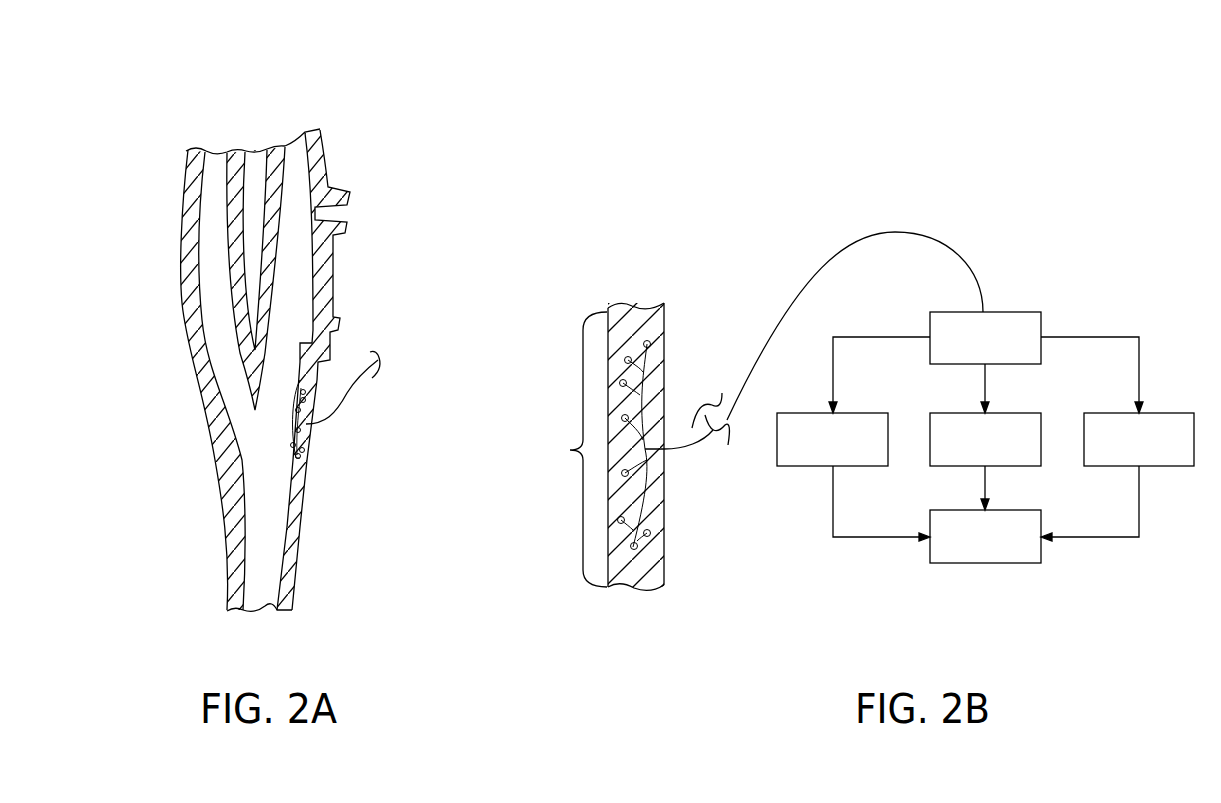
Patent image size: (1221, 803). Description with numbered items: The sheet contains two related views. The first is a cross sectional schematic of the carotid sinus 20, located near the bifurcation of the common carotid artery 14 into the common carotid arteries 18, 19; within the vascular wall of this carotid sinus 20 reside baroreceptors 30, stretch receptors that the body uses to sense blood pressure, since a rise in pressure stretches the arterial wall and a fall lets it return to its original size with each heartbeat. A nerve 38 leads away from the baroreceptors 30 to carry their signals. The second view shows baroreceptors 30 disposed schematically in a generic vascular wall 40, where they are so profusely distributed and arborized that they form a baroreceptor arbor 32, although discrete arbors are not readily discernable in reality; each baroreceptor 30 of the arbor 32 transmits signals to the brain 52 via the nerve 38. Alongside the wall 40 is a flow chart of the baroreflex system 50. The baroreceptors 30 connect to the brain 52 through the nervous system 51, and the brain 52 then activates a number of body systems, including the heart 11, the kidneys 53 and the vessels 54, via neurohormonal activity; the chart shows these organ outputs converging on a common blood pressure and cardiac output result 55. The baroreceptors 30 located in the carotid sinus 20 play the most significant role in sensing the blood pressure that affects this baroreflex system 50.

In FIG. 2A, the common carotid artery 14 is at (288, 577).
In FIG. 2A, the common carotid artery 18 is at (190, 205).
In FIG. 2A, the common carotid artery 19 is at (320, 161).
In FIG. 2A, the carotid sinus 20 is at (183, 459).
In FIG. 2A, the baroreceptors 30 is at (317, 437).
In FIG. 2B, the baroreceptors 30 is at (668, 493).
In FIG. 2A, the nerve 38 is at (347, 393).
In FIG. 2B, the nerve 38 is at (708, 443).
In FIG. 2B, the baroreceptor arbor 32 is at (570, 449).
In FIG. 2B, the vascular wall 40 is at (667, 550).
In FIG. 2B, the nervous system 51 is at (798, 285).
In FIG. 2B, the baroreflex system 50 is at (1053, 302).
In FIG. 2B, the brain 52 is at (1042, 324).
In FIG. 2B, the heart 11 is at (813, 467).
In FIG. 2B, the kidneys 53 is at (942, 467).
In FIG. 2B, the vessels 54 is at (1168, 467).
In FIG. 2B, the blood pressure / cardiac output 55 is at (990, 564).